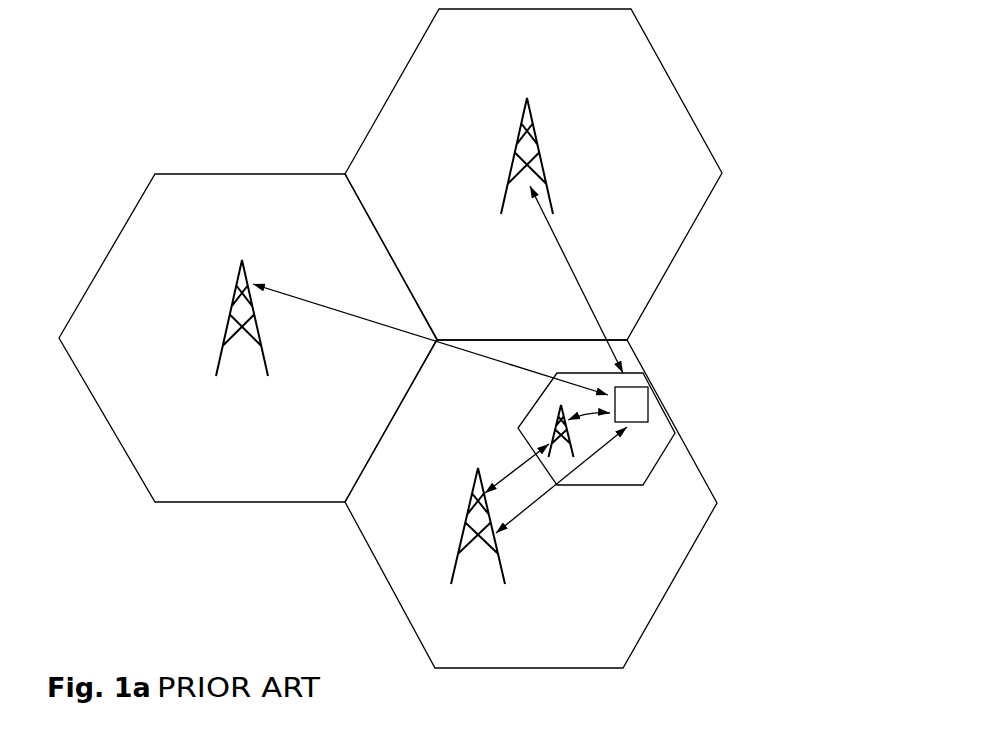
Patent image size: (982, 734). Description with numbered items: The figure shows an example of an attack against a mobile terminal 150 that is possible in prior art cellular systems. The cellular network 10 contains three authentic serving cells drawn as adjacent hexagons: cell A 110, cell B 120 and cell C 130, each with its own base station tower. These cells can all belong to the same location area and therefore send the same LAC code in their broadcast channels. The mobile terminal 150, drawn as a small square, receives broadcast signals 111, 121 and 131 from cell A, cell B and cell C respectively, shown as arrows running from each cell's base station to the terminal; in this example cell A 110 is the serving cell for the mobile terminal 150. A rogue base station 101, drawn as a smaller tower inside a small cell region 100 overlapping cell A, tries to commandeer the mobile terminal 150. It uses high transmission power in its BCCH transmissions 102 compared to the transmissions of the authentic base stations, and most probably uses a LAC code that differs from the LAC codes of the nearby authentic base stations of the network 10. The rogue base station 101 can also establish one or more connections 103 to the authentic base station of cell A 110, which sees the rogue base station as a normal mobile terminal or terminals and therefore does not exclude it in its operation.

The network 10 is at (742, 135).
The serving cell 100 is at (633, 475).
The rogue base station 101 is at (546, 436).
The BCCH transmissions 102 is at (592, 411).
The connections 103 is at (510, 462).
The cell A 110 is at (417, 590).
The broadcast signal 111 is at (561, 480).
The cell B 120 is at (632, 62).
The broadcast signal 121 is at (576, 279).
The cell C 130 is at (222, 190).
The broadcast signal 131 is at (430, 339).
The mobile terminal 150 is at (635, 408).